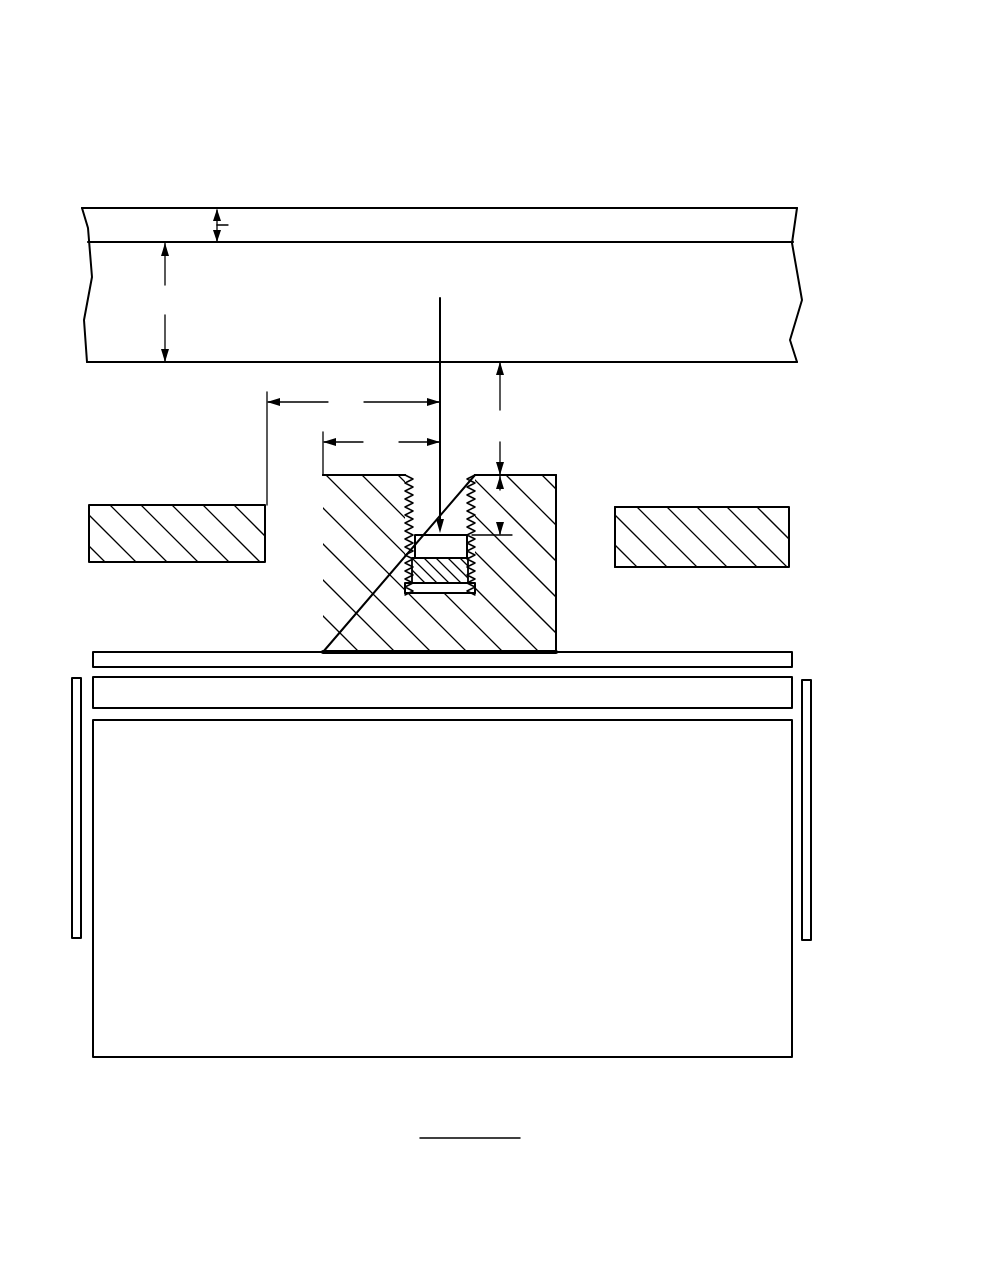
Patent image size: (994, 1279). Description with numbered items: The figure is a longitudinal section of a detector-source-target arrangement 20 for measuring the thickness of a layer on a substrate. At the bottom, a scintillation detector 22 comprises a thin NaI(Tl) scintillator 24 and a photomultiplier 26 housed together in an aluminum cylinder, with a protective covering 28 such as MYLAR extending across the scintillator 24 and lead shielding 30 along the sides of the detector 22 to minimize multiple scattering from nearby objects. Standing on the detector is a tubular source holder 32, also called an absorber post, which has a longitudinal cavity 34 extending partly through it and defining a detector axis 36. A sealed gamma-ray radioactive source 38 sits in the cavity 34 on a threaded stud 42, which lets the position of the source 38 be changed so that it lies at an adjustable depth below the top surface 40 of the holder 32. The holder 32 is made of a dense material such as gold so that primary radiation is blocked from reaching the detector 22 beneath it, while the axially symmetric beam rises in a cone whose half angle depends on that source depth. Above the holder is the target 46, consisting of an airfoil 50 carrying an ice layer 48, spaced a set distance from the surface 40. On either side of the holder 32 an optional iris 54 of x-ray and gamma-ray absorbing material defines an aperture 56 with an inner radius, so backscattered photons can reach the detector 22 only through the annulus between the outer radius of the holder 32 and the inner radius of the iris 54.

The detector-source-target arrangement 20 is at (714, 96).
The scintillation detector 22 is at (463, 833).
The scintillator 24 is at (235, 690).
The photomultiplier 26 is at (438, 1000).
The protective covering 28 is at (165, 657).
The lead shielding 30 is at (78, 705).
The source holder 32 is at (432, 533).
The longitudinal cavity 34 is at (400, 503).
The detector axis 36 is at (443, 332).
The radioactive source 38 is at (412, 553).
The top surface 40 is at (541, 476).
The threaded stud 42 is at (476, 580).
The target 46 is at (479, 280).
The ice layer 48 is at (522, 222).
The airfoil 50 is at (718, 325).
The iris 54 is at (164, 513).
The aperture 56 is at (616, 540).